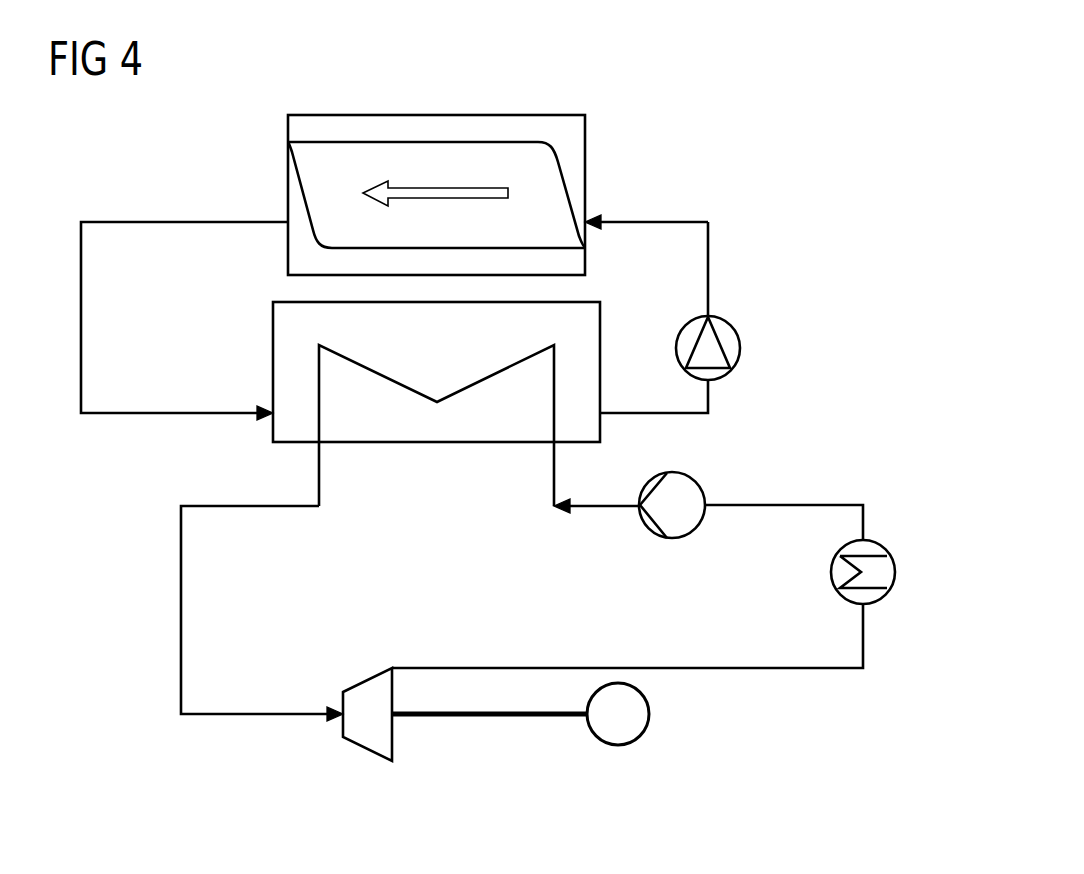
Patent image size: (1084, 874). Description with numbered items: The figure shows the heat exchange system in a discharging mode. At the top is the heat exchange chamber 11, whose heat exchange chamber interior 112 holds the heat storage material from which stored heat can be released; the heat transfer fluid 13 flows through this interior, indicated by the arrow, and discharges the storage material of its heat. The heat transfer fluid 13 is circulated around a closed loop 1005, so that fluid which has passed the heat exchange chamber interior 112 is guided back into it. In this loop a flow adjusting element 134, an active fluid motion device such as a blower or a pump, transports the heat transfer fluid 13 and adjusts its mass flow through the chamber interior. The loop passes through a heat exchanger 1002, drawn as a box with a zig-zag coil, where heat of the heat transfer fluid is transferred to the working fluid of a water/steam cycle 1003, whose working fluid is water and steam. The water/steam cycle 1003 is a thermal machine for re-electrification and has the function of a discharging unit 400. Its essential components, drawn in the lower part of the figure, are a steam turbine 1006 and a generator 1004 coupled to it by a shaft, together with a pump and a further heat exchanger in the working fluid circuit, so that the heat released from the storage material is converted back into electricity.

The heat exchange chamber 11 is at (470, 155).
The heat exchange chamber interior 112 is at (571, 121).
The heat transfer fluid 13 is at (424, 193).
The flow adjusting element 134 is at (742, 347).
The discharging unit 400 is at (140, 610).
The heat exchanger 1002 is at (273, 432).
The water/steam cycle 1003 is at (845, 707).
The generator 1004 is at (650, 712).
The closed loop 1005 is at (705, 314).
The steam turbine 1006 is at (396, 738).